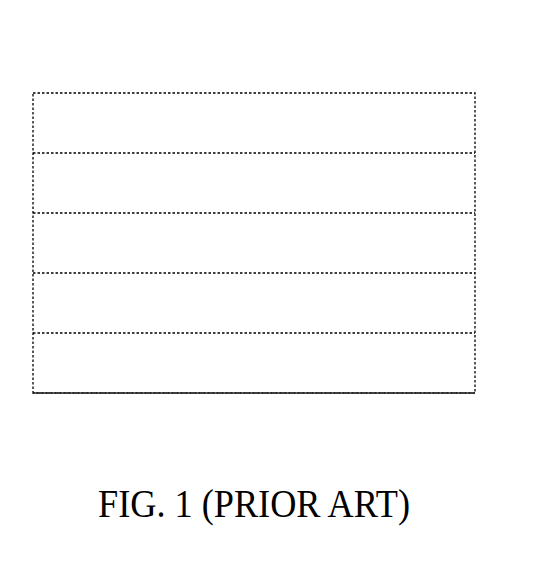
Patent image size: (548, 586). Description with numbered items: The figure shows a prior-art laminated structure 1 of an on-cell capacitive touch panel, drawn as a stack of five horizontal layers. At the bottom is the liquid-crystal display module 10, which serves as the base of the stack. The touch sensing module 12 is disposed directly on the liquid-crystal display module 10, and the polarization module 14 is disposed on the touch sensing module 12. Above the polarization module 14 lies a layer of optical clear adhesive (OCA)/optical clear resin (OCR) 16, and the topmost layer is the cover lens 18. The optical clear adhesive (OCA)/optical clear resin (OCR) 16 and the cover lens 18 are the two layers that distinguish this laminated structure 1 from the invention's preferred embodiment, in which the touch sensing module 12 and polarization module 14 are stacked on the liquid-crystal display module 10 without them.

The laminated structure 1 is at (40, 37).
The liquid-crystal display module 10 is at (268, 377).
The touch sensing module 12 is at (268, 317).
The polarization module 14 is at (268, 257).
The optical clear adhesive (OCA)/optical clear resin (OCR) 16 is at (268, 197).
The cover lens 18 is at (268, 137).